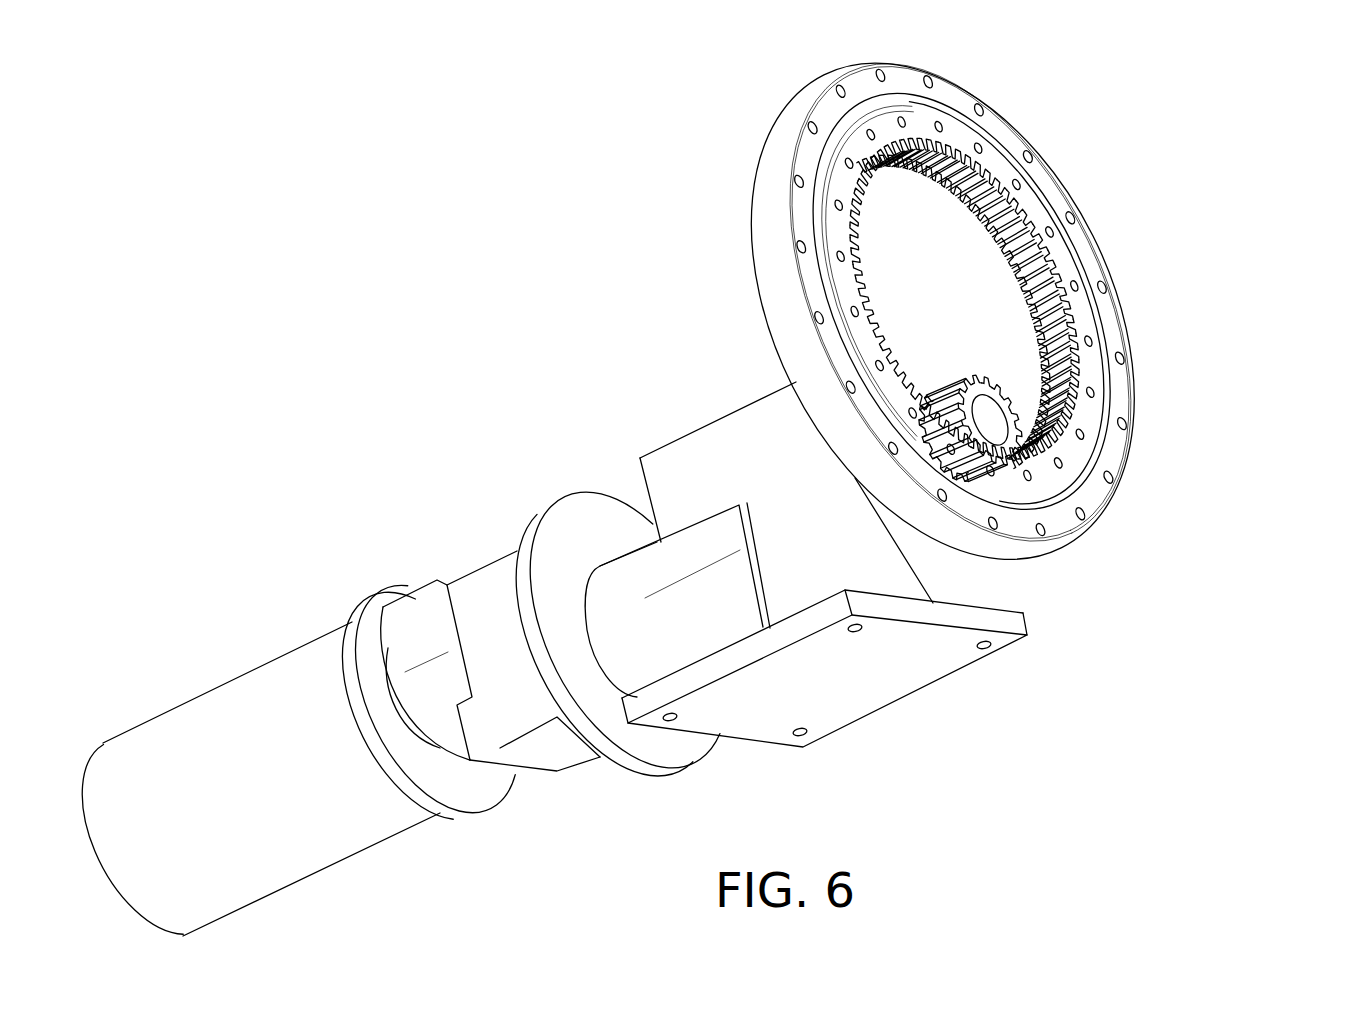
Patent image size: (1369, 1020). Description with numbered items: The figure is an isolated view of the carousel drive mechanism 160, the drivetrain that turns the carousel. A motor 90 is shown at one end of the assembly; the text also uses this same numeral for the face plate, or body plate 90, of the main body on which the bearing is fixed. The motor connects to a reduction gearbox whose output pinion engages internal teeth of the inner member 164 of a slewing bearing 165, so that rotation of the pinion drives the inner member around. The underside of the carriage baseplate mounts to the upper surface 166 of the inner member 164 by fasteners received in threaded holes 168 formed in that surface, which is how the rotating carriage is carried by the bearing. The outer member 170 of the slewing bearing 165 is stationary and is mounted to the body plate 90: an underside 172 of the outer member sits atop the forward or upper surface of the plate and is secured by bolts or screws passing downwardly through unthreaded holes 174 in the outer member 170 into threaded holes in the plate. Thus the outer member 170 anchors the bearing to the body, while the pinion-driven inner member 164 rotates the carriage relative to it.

The face plate 90 is at (228, 718).
The drive assembly 160 is at (575, 473).
The inner member 164 is at (1098, 306).
The slewing bearing 165 is at (961, 311).
The upper surface 166 is at (1068, 262).
The threaded holes 168 is at (1020, 182).
The outer member 170 is at (1136, 382).
The underside 172 is at (753, 293).
The holes 174 is at (1112, 474).